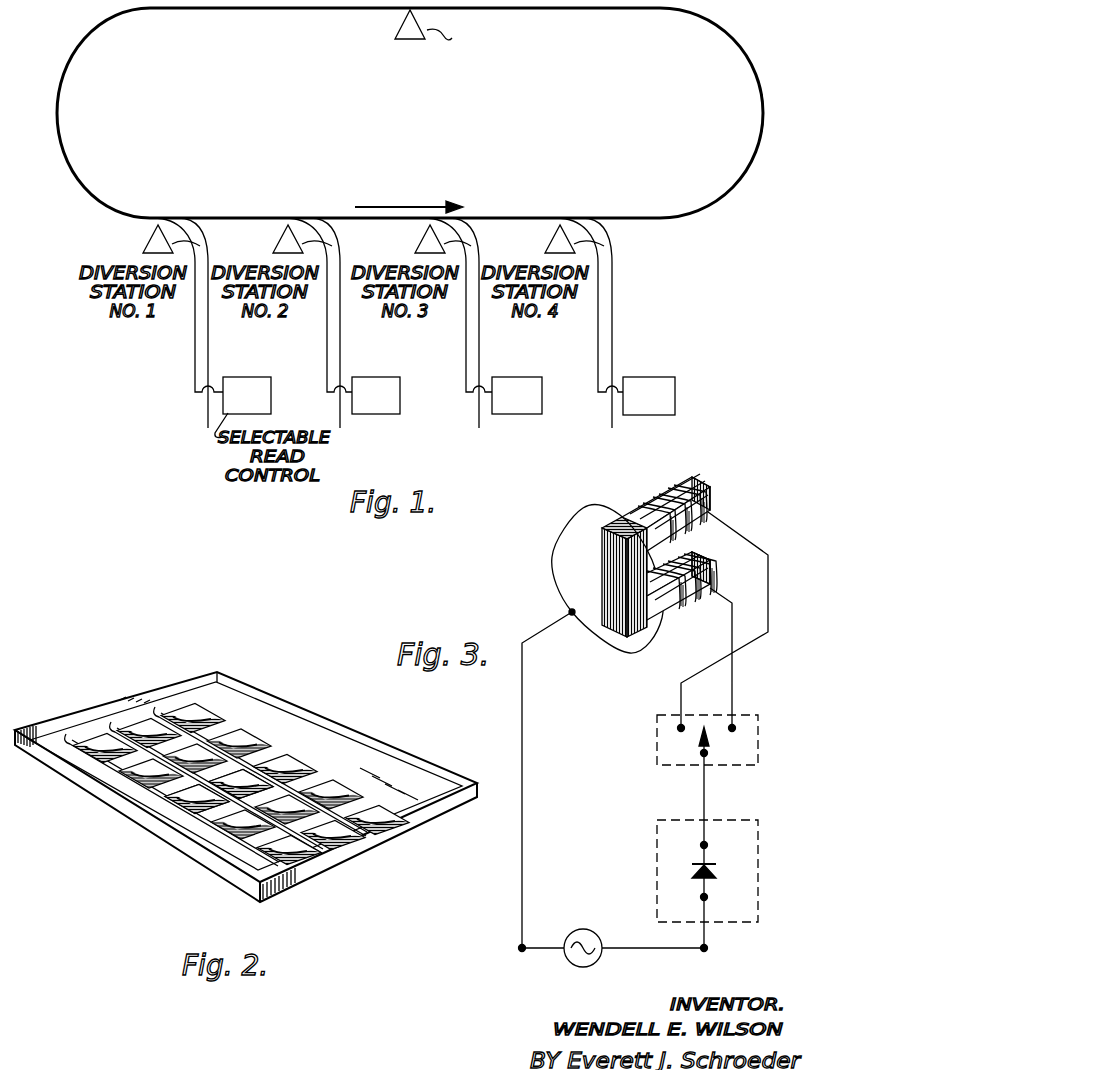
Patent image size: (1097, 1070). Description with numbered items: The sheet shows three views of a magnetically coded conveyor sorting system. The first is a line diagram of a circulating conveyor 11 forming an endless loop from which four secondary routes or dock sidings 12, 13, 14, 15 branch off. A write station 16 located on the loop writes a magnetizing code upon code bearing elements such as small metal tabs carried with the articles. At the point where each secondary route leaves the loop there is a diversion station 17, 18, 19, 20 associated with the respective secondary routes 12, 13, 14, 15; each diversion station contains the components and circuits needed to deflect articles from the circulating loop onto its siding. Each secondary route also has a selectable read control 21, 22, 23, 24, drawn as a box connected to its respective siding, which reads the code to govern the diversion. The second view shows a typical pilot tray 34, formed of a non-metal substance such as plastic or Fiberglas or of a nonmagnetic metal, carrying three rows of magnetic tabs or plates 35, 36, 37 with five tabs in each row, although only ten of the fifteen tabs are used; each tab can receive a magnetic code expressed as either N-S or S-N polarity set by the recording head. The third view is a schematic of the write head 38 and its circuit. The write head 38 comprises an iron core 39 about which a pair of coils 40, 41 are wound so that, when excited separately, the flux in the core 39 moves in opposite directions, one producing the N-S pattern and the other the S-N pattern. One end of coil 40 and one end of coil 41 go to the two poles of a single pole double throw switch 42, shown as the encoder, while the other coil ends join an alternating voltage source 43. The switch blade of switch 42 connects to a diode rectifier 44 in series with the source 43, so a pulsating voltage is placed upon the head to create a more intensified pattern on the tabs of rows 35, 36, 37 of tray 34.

In FIG. 1, the circulating conveyor 11 is at (762, 117).
In FIG. 1, the secondary route 12 is at (209, 345).
In FIG. 1, the secondary route 13 is at (341, 345).
In FIG. 1, the secondary route 14 is at (480, 345).
In FIG. 1, the secondary route 15 is at (613, 345).
In FIG. 1, the write station 16 is at (416, 40).
In FIG. 1, the diversion station 17 is at (146, 244).
In FIG. 1, the diversion station 18 is at (279, 244).
In FIG. 1, the diversion station 19 is at (421, 244).
In FIG. 1, the diversion station 20 is at (552, 244).
In FIG. 1, the selectable read control 21 is at (252, 377).
In FIG. 1, the selectable read control 22 is at (387, 377).
In FIG. 1, the selectable read control 23 is at (522, 377).
In FIG. 1, the selectable read control 24 is at (654, 377).
In FIG. 2, the pilot tray 34 is at (374, 738).
In FIG. 2, the row of magnetic tabs 35 is at (176, 805).
In FIG. 2, the row of magnetic tabs 36 is at (216, 794).
In FIG. 2, the row of magnetic tabs 37 is at (256, 776).
In FIG. 3, the write head 38 is at (661, 563).
In FIG. 3, the iron core 39 is at (711, 568).
In FIG. 3, the coil 40 is at (684, 527).
In FIG. 3, the coil 41 is at (681, 606).
In FIG. 3, the single pole double throw switch 42 is at (741, 766).
In FIG. 3, the alternating voltage source 43 is at (597, 933).
In FIG. 3, the diode rectifier 44 is at (733, 819).